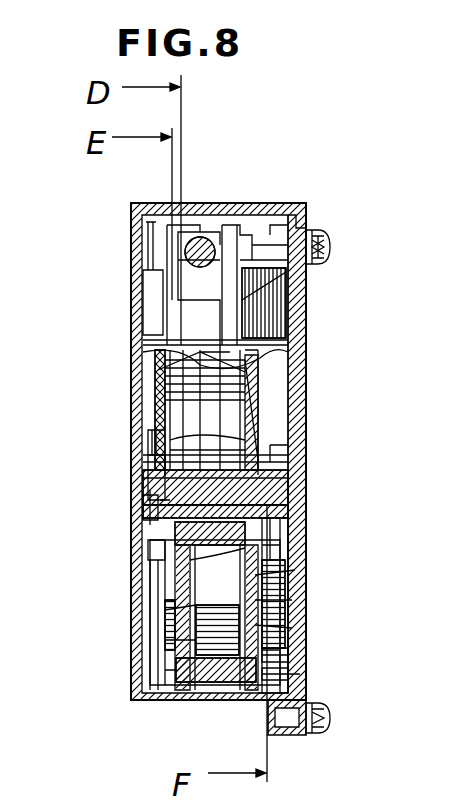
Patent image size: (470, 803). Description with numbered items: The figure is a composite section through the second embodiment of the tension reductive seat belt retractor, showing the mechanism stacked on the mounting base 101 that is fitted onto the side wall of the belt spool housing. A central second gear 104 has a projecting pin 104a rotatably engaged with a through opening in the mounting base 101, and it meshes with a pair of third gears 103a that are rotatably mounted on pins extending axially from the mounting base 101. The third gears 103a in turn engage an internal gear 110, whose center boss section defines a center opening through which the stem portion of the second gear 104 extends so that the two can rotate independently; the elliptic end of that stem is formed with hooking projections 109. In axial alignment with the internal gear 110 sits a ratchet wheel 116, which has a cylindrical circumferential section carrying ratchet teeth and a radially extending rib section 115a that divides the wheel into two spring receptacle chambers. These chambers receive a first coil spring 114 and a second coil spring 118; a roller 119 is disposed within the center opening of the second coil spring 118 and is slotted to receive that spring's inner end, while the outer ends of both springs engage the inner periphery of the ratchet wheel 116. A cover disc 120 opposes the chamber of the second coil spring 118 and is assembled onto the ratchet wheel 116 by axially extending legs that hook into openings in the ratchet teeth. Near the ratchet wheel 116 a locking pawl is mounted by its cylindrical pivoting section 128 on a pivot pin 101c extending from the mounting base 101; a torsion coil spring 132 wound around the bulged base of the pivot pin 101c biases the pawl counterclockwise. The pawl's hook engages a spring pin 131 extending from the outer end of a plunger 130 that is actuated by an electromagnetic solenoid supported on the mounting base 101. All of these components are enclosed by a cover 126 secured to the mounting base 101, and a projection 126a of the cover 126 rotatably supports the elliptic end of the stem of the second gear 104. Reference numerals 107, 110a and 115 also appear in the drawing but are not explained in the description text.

The mounting base 101 is at (330, 248).
The pivot pin 101c is at (304, 232).
The third gears 103a is at (292, 600).
The second gear 104 is at (292, 543).
The projecting pin 104a is at (292, 510).
The bearing 107 is at (292, 457).
The hooking projections 109 is at (143, 462).
The internal gear 110 is at (292, 678).
The bearing retainer 110a is at (292, 654).
The first coil spring 114 is at (168, 693).
The plate 115 is at (292, 490).
The rib section 115a is at (160, 586).
The ratchet wheel 116 is at (235, 700).
The second coil spring 118 is at (160, 645).
The roller 119 is at (288, 428).
The cover disc 120 is at (298, 352).
The cover 126 is at (143, 297).
The projection 126a is at (143, 507).
The cylindrical pivoting section 128 is at (178, 318).
The plunger 130 is at (165, 250).
The spring pin 131 is at (236, 206).
The torsion coil spring 132 is at (264, 206).